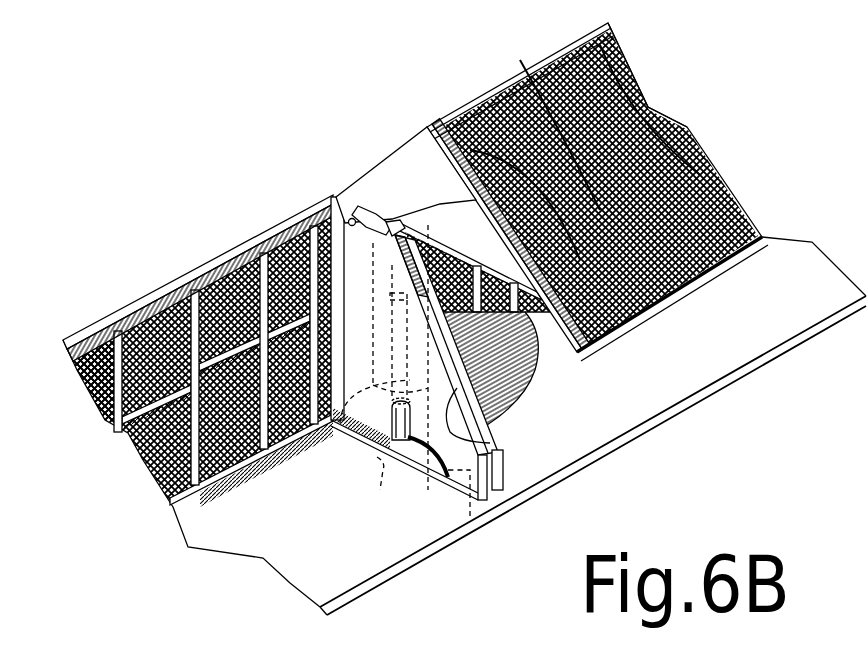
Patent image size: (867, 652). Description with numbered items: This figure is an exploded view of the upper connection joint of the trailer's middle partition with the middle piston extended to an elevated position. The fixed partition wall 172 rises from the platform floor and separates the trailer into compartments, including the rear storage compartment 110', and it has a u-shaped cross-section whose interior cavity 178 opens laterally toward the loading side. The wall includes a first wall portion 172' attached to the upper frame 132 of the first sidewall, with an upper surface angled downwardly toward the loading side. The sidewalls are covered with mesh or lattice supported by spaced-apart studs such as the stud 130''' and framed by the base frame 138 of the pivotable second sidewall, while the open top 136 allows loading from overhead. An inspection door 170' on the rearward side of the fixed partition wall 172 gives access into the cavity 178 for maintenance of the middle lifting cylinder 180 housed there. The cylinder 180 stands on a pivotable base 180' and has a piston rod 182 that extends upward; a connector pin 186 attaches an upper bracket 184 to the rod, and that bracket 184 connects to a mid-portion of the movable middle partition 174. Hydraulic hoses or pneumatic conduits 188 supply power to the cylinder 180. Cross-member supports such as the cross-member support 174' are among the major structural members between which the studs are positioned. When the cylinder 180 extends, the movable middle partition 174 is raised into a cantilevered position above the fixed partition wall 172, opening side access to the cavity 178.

The storage compartment 110' is at (191, 473).
The stud 130''' is at (76, 344).
The upper frame 132 is at (137, 305).
The open top 136 is at (490, 97).
The base frame 138 is at (689, 292).
The inspection door 170' is at (387, 489).
The fixed partition wall 172 is at (256, 308).
The first wall portion 172' is at (523, 457).
The movable middle partition 174 is at (565, 187).
The cross-member support 174' is at (374, 160).
The interior cavity 178 is at (484, 443).
The middle lifting cylinder 180 is at (370, 357).
The pivotable base 180' is at (426, 463).
The piston rod 182 is at (343, 247).
The upper bracket 184 is at (353, 223).
The connector pin 186 is at (470, 112).
The hydraulic hoses or pneumatic conduits 188 is at (478, 523).